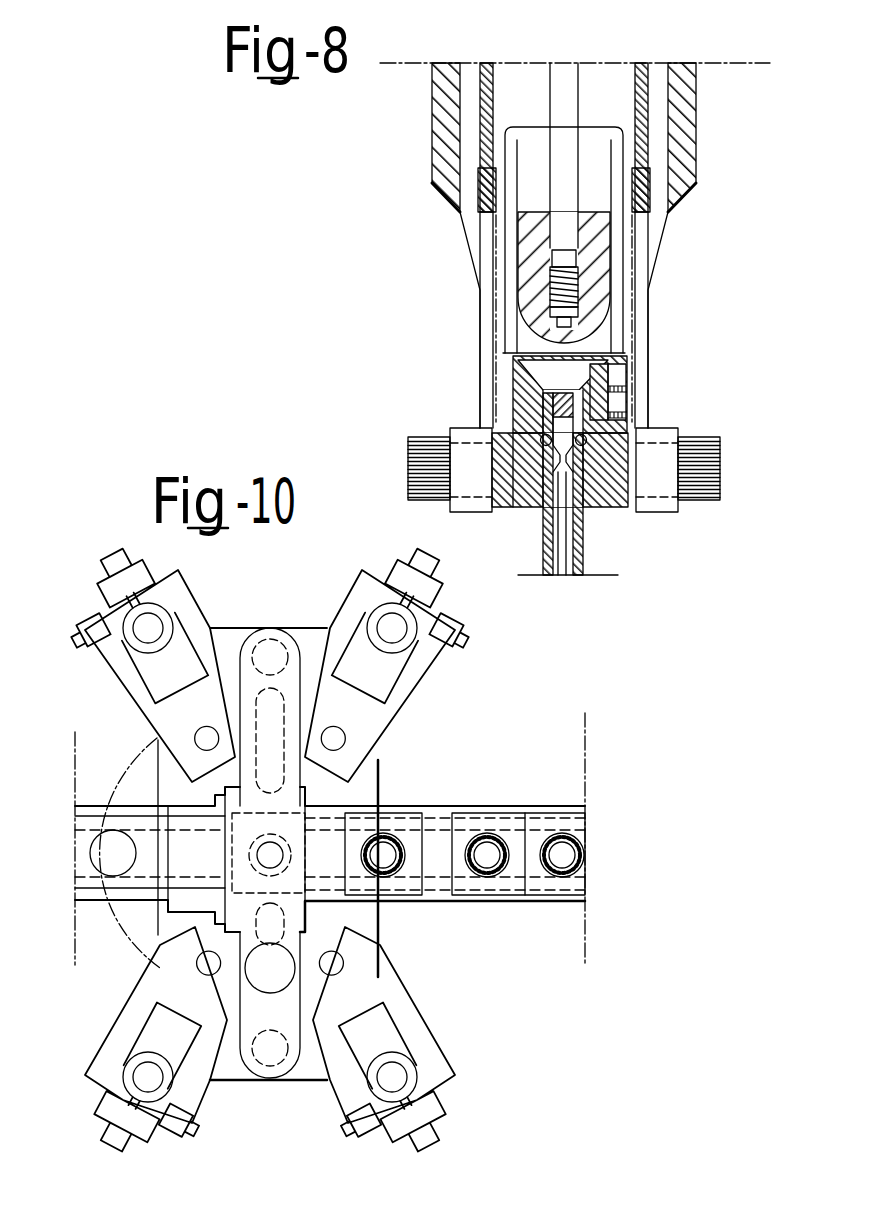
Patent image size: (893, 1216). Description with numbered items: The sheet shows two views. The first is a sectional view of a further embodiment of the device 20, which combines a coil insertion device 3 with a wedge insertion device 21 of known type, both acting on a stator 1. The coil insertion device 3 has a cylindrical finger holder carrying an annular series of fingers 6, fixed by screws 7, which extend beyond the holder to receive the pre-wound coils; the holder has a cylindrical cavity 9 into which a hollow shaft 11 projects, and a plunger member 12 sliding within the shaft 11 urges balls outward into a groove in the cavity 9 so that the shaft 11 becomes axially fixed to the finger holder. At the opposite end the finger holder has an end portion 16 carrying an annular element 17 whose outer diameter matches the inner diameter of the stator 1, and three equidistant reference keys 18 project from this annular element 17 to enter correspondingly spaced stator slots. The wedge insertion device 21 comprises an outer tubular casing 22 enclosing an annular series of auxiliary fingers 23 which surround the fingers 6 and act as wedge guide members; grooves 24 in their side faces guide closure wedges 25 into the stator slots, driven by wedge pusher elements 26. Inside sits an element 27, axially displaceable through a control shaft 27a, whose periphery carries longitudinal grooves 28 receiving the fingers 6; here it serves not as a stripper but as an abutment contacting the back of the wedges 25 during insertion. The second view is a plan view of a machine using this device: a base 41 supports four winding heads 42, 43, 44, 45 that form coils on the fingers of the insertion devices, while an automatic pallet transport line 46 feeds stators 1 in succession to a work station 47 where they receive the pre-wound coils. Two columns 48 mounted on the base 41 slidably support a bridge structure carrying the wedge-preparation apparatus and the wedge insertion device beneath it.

In FIG. 8, the stator 1 is at (662, 447).
In FIG. 10, the stator 1 is at (381, 853).
In FIG. 8, the coil insertion device 3 is at (680, 410).
In FIG. 8, the fingers 6 is at (505, 340).
In FIG. 8, the screws 7 is at (600, 392).
In FIG. 8, the cylindrical cavity 9 is at (588, 512).
In FIG. 8, the hollow shaft 11 is at (553, 549).
In FIG. 8, the plunger member 12 is at (561, 558).
In FIG. 8, the end portion 16 is at (600, 482).
In FIG. 8, the annular element 17 is at (507, 482).
In FIG. 8, the reference keys 18 is at (483, 450).
In FIG. 8, the device 20 is at (702, 270).
In FIG. 8, the wedge insertion device 21 is at (702, 128).
In FIG. 8, the outer tubular casing 22 is at (443, 107).
In FIG. 8, the auxiliary fingers 23 is at (470, 208).
In FIG. 8, the grooves 24 is at (480, 313).
In FIG. 8, the wedges 25 is at (488, 262).
In FIG. 8, the wedge pusher elements 26 is at (484, 80).
In FIG. 8, the abutment element 27 is at (530, 208).
In FIG. 8, the control shaft 27a is at (556, 80).
In FIG. 8, the longitudinal grooves 28 is at (614, 228).
In FIG. 10, the base 41 is at (198, 1062).
In FIG. 10, the winding head 42 is at (193, 640).
In FIG. 10, the winding head 43 is at (375, 692).
In FIG. 10, the winding head 44 is at (375, 1035).
In FIG. 10, the winding head 45 is at (168, 1033).
In FIG. 10, the automatic pallet transport line 46 is at (472, 803).
In FIG. 10, the work station 47 is at (313, 837).
In FIG. 10, the columns 48 is at (272, 656).